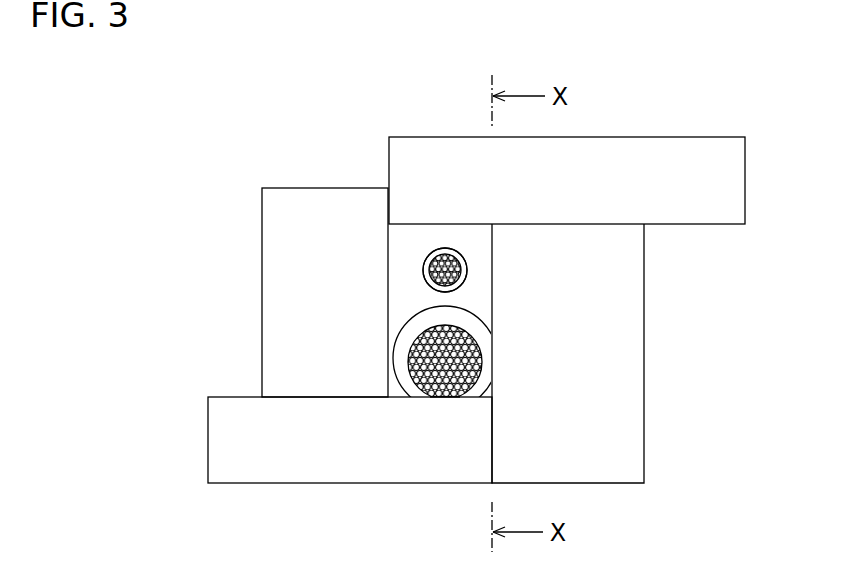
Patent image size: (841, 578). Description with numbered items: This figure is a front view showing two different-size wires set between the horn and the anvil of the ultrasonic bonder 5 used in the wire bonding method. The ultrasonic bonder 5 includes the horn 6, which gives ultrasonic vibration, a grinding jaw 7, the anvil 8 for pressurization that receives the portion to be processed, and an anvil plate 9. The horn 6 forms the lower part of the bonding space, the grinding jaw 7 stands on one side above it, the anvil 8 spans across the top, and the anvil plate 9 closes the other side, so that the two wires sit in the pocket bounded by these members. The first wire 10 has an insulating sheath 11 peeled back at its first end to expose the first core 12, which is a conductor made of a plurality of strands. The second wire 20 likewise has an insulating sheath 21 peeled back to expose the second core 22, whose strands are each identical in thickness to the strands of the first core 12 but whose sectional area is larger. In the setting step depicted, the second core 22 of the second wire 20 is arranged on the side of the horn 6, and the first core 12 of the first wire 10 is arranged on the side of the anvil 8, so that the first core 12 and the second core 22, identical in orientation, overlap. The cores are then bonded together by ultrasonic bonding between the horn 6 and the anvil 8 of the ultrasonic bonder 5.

The ultrasonic bonder 5 is at (280, 125).
The horn 6 is at (313, 475).
The grinding jaw 7 is at (275, 211).
The anvil 8 is at (645, 150).
The anvil plate 9 is at (632, 427).
The first wire 10 is at (470, 258).
The insulating sheath 11 is at (466, 274).
The first core 12 is at (423, 278).
The second wire 20 is at (402, 323).
The insulating sheath 21 is at (406, 367).
The second core 22 is at (440, 398).